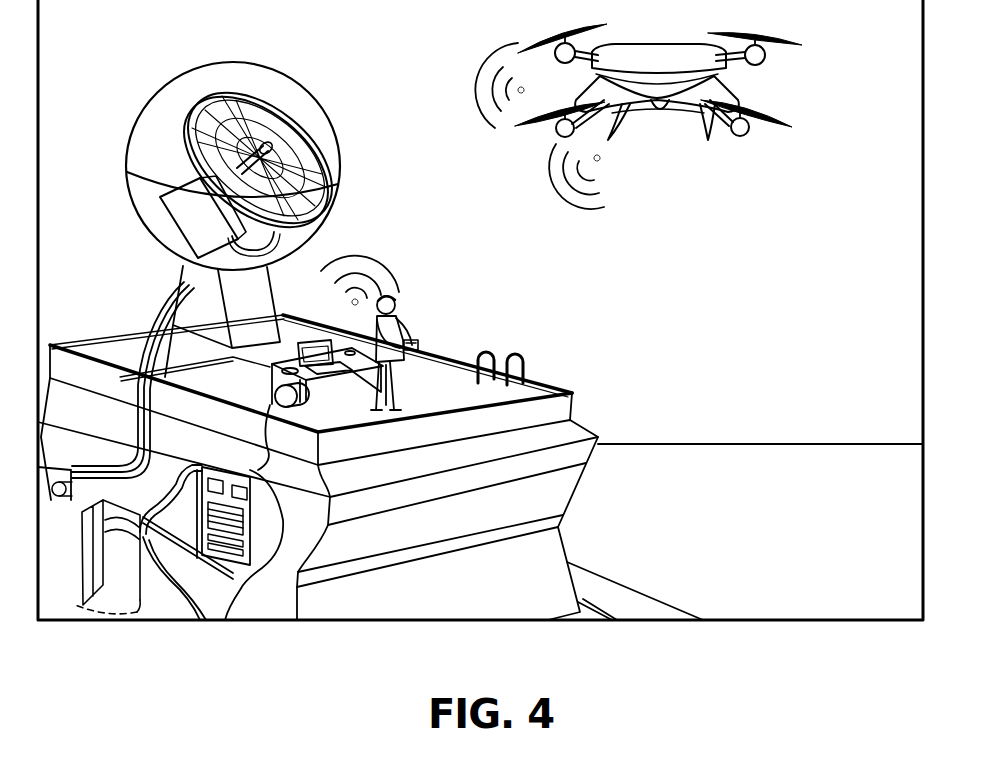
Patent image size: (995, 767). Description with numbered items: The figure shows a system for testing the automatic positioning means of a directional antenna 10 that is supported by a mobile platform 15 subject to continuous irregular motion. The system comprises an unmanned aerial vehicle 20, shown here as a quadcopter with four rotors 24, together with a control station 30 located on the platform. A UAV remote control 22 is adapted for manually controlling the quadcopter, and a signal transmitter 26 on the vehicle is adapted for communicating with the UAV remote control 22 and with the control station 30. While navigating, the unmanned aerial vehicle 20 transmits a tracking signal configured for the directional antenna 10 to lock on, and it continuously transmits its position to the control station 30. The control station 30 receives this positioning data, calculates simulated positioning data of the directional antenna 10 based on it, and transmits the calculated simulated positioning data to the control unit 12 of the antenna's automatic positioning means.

The directional antenna 10 is at (280, 160).
The control unit 12 is at (162, 518).
The mobile platform 15 is at (577, 455).
The unmanned aerial vehicle 20 is at (678, 110).
The UAV remote control 22 is at (434, 335).
The rotors 24 is at (792, 35).
The signal transmitter 26 is at (657, 114).
The control station 30 is at (301, 333).